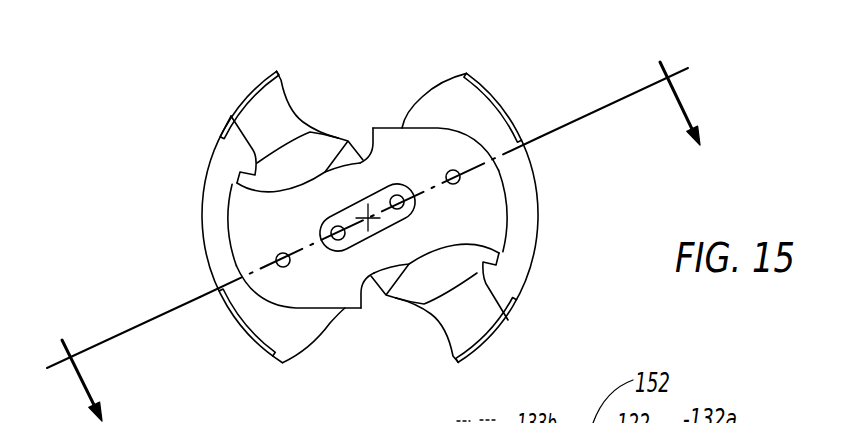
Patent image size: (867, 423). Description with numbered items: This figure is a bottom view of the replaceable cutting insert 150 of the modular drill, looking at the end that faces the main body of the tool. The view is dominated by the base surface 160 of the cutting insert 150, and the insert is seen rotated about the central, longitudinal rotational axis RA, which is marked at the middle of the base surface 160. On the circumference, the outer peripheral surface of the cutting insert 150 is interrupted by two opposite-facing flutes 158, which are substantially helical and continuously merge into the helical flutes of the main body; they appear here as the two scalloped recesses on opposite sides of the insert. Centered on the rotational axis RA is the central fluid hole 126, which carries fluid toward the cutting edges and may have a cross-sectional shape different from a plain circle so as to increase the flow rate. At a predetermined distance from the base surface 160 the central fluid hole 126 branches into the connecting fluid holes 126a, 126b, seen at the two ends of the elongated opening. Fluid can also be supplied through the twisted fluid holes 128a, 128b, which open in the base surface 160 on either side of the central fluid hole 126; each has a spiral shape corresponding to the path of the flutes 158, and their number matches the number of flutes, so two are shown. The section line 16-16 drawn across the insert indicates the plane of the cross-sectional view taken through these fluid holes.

The cutting insert 150 is at (363, 218).
The flutes 158 is at (321, 80).
The base surface 160 is at (305, 290).
The central fluid hole 126 is at (365, 140).
The connecting fluid hole 126a is at (327, 229).
The connecting fluid hole 126b is at (398, 196).
The twisted fluid hole 128a is at (277, 257).
The twisted fluid hole 128b is at (455, 168).
The rotational axis RA is at (368, 217).
The section line 16- 16 is at (371, 223).